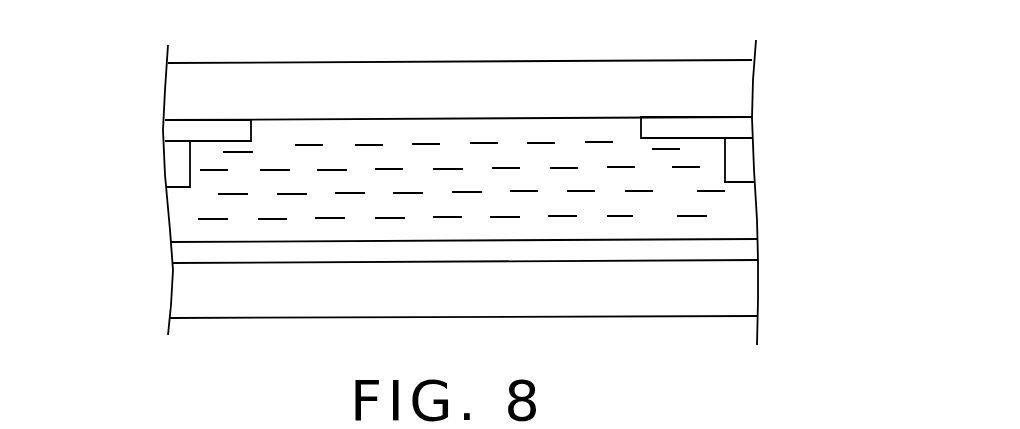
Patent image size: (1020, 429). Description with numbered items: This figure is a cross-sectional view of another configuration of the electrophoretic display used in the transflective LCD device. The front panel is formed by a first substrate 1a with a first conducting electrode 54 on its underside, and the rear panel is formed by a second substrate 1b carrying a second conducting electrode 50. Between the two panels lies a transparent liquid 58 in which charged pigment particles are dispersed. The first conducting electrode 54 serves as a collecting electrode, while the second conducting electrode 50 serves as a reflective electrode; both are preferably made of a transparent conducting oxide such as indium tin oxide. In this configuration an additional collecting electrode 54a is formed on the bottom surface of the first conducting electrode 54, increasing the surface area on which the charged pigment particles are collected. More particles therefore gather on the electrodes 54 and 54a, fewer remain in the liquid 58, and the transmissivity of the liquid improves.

The first substrate 1a is at (458, 90).
The second substrate 1b is at (463, 299).
The second conducting electrode 50 is at (257, 255).
The first conducting electrode 54 is at (176, 130).
The additional collecting electrode 54a is at (176, 166).
The liquid 58 is at (720, 225).